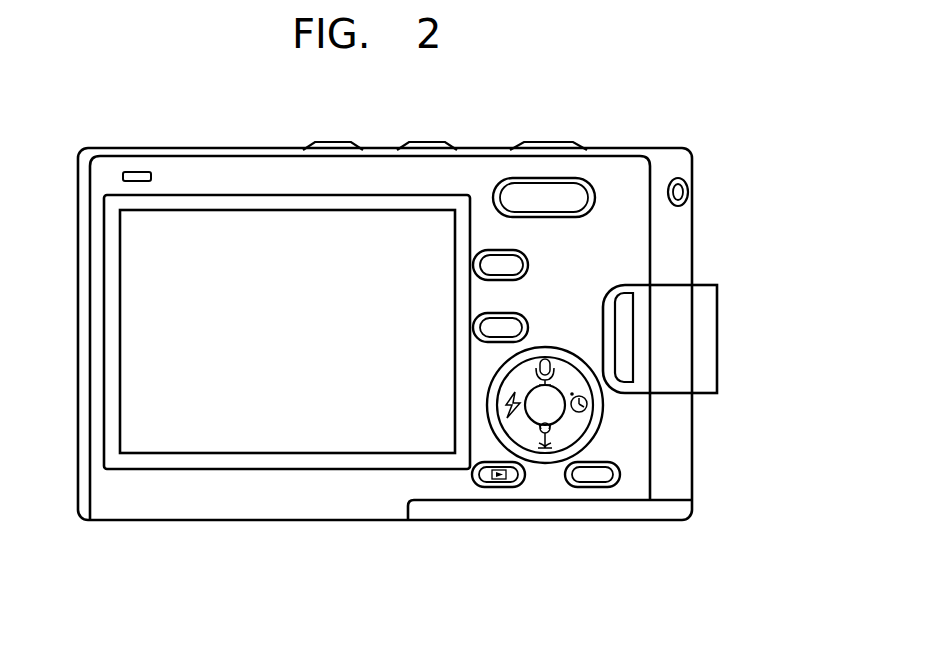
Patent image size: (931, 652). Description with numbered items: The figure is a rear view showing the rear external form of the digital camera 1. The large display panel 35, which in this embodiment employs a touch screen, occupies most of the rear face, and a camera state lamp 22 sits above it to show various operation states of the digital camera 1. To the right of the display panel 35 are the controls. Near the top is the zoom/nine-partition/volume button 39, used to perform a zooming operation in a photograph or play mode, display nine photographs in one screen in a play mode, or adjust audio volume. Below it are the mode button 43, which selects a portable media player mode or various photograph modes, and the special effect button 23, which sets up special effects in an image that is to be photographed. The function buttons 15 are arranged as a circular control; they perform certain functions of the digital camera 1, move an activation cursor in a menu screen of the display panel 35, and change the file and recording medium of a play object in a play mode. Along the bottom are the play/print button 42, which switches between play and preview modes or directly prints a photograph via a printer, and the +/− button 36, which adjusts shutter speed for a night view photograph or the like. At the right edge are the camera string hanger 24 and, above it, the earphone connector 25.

The digital camera 1 is at (680, 122).
The function buttons 15 is at (597, 420).
The camera state lamp 22 is at (137, 175).
The special effect button 23 is at (520, 318).
The camera string hanger 24 is at (707, 337).
The earphone connector 25 is at (686, 192).
The display panel 35 is at (246, 230).
The +/− button 36 is at (590, 487).
The zoom/9 partition/volume button 39 is at (535, 192).
The play/print button 42 is at (497, 487).
The mode button 43 is at (487, 252).